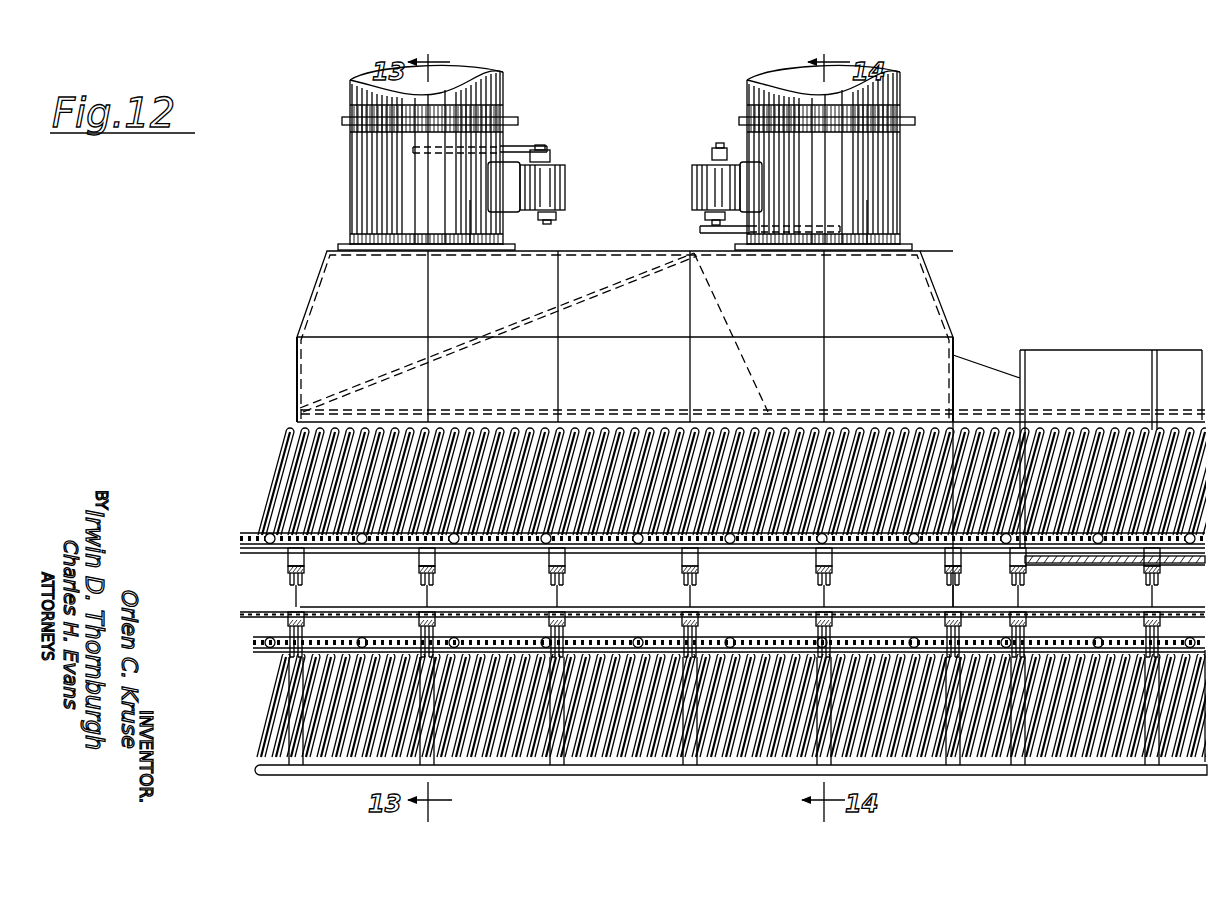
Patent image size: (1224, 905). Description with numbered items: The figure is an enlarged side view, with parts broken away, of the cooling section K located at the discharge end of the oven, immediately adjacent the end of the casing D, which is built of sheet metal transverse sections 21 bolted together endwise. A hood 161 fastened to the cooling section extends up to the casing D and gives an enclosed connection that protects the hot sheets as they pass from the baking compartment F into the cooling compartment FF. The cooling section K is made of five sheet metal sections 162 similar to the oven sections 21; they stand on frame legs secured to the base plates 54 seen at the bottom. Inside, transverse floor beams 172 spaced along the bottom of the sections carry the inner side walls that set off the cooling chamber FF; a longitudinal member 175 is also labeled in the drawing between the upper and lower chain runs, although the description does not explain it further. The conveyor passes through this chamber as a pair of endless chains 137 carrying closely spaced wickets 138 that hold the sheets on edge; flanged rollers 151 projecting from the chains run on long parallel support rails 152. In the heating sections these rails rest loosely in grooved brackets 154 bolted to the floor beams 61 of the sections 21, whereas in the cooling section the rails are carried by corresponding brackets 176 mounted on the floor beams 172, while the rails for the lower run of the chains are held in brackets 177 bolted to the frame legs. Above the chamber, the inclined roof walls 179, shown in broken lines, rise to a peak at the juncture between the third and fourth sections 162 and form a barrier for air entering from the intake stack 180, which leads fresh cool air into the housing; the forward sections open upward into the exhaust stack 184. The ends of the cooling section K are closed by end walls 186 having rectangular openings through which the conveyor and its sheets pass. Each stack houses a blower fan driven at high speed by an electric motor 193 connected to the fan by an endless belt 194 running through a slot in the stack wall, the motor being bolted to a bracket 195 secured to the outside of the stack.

The transverse sections 21 is at (1170, 375).
The base plates 54 is at (955, 767).
The floor beams 61 is at (1030, 572).
The endless chains 137 is at (486, 640).
The wickets 138 is at (648, 432).
The flanged rollers 151 is at (640, 640).
The support rails 152 is at (755, 653).
The brackets 154 is at (1015, 553).
The hood 161 is at (990, 378).
The sheet metal sections 162 is at (905, 303).
The floor beams 172 is at (290, 580).
The frame channel 175 is at (316, 596).
The brackets 176 is at (425, 555).
The brackets 177 is at (432, 648).
The inclined roof walls 179 is at (612, 275).
The intake stack 180 is at (366, 180).
The exhaust stack 184 is at (883, 166).
The end walls 186 is at (293, 362).
The electric motors 193 is at (548, 190).
The endless belts 194 is at (513, 160).
The brackets 195 is at (508, 200).
The casing D is at (1095, 348).
The baking compartment F is at (1115, 580).
The cooling compartment FF is at (910, 577).
The cooling casing K is at (932, 246).